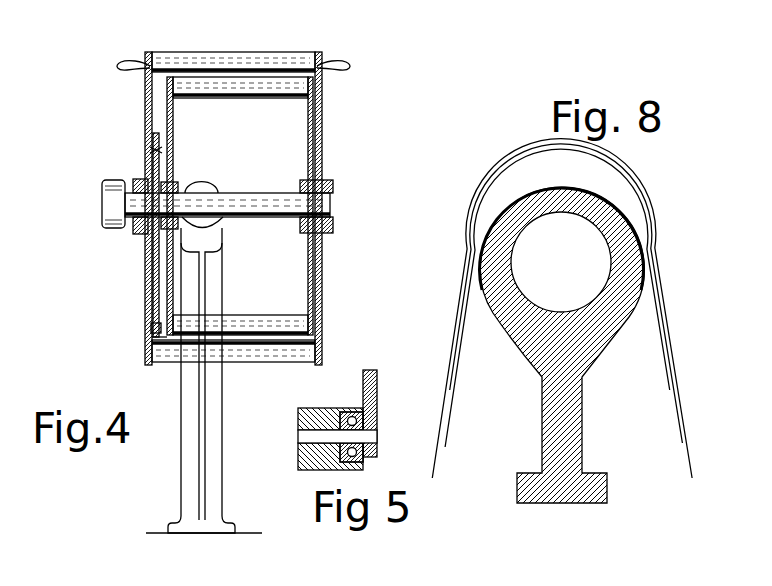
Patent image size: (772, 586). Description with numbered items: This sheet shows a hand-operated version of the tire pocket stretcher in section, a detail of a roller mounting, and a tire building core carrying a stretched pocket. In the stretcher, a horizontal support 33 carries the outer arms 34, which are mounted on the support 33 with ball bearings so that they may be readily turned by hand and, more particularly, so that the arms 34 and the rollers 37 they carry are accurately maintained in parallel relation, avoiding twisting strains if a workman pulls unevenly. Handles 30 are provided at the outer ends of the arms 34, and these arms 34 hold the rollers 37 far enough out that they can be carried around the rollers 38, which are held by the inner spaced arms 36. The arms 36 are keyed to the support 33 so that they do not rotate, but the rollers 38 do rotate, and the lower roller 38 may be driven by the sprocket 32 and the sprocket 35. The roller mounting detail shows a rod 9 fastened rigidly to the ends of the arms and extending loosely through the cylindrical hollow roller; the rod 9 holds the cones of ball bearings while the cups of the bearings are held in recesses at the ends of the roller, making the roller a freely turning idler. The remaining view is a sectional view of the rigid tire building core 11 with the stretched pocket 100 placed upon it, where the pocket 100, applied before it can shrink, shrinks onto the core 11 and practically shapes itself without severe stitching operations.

In FIG. 4, the handles 30 is at (121, 62).
In FIG. 4, the arms 34 is at (145, 100).
In FIG. 5, the arms 34 is at (378, 381).
In FIG. 4, the inner spaced arms 36 is at (174, 125).
In FIG. 4, the rollers 38 is at (290, 98).
In FIG. 4, the horizontal support 33 is at (242, 195).
In FIG. 4, the sprocket 32 is at (147, 247).
In FIG. 4, the sprocket 35 is at (148, 333).
In FIG. 4, the rollers 37 is at (255, 368).
In FIG. 5, the rollers 37 is at (307, 408).
In FIG. 5, the rod 9 is at (302, 440).
In FIG. 8, the core 11 is at (617, 327).
In FIG. 8, the stretched pocket 100 is at (663, 292).